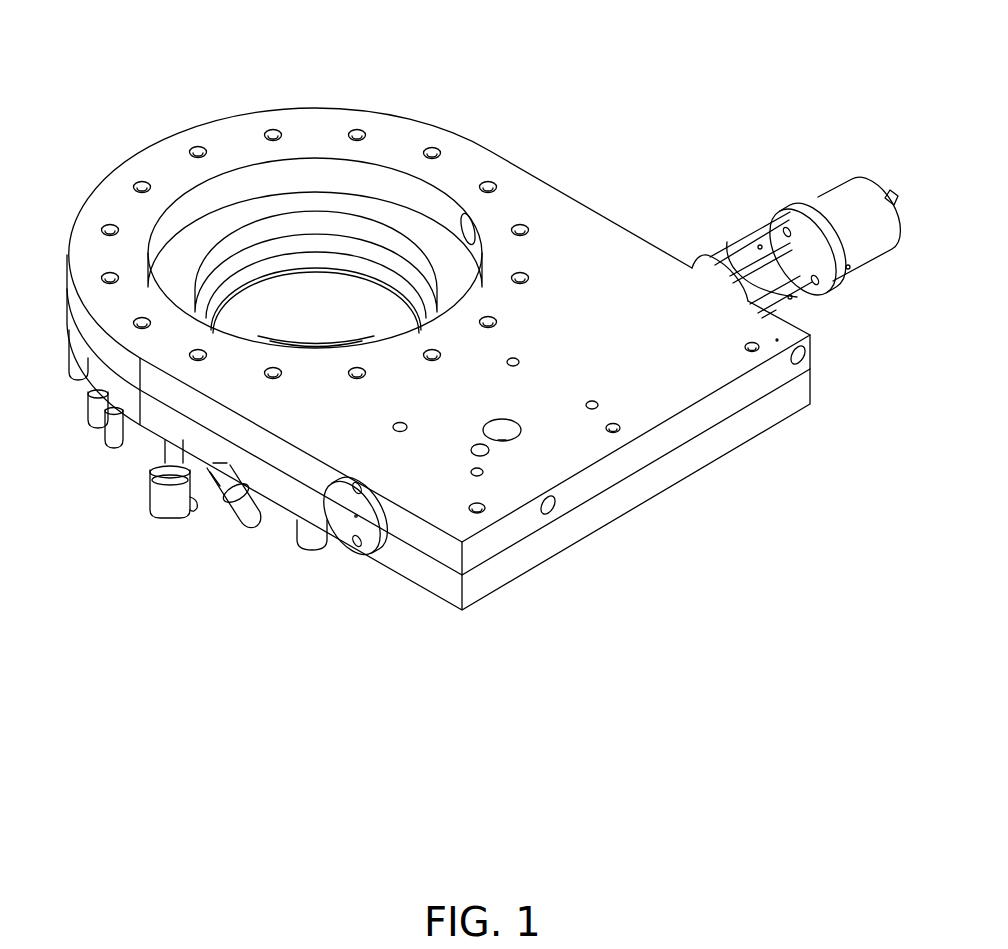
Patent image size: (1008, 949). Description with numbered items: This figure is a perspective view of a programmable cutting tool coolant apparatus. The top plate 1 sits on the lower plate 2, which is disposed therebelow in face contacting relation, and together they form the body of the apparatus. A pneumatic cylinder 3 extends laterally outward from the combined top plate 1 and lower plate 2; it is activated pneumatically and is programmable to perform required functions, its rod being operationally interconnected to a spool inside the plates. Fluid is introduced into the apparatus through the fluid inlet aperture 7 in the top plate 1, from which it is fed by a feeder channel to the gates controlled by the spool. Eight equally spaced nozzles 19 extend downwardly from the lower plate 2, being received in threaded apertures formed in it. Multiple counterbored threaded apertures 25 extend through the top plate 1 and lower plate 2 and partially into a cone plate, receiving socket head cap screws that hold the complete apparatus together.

The top plate 1 is at (438, 341).
The lower plate 2 is at (530, 553).
The pneumatic cylinder 3 is at (803, 227).
The fluid inlet aperture 7 is at (511, 430).
The nozzles 19 is at (163, 500).
The counterbored threaded apertures 25 is at (366, 134).